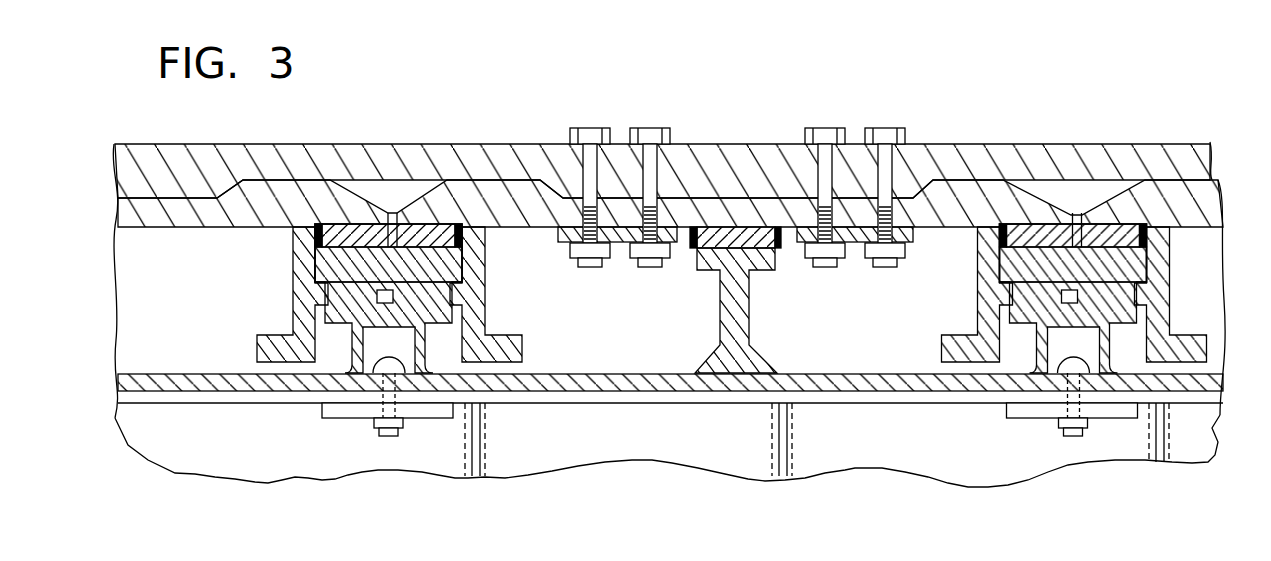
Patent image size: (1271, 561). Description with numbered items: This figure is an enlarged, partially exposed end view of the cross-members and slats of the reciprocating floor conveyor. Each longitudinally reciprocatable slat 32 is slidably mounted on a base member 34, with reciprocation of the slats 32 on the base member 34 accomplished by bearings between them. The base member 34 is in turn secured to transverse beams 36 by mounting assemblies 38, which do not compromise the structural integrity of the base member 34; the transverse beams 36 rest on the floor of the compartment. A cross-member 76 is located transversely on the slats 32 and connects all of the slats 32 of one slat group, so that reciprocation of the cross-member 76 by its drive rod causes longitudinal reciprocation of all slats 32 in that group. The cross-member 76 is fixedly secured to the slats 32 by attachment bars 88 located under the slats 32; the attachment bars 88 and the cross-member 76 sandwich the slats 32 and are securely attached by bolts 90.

The slat 32 is at (503, 192).
The base member 34 is at (650, 389).
The transverse beam 36 is at (912, 445).
The mounting assembly 38 is at (368, 420).
The cross-member 76 is at (462, 147).
The attachment bar 88 is at (560, 236).
The bolt 90 is at (593, 268).